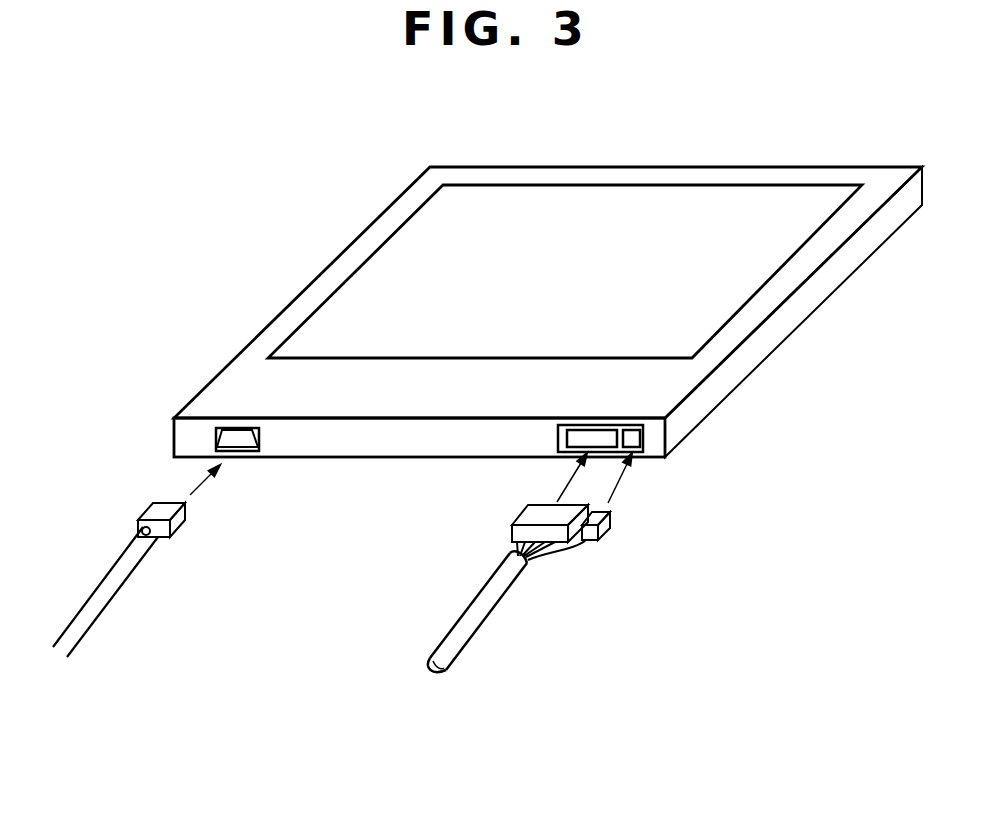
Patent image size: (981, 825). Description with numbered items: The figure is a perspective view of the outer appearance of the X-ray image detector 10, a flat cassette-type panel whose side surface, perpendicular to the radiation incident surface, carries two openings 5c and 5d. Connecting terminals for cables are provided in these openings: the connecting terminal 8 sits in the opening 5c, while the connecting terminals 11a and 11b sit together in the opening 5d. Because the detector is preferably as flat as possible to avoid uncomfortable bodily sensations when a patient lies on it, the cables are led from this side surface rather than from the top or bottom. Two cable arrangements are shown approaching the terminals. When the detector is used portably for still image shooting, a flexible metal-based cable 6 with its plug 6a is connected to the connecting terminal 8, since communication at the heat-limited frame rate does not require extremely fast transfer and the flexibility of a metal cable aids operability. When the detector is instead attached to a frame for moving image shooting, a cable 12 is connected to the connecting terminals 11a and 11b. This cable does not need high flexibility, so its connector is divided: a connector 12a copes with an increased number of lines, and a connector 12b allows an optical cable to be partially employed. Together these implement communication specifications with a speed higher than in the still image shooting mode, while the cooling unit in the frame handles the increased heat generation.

The X-ray image detector 10 is at (790, 282).
The opening 5c is at (216, 434).
The connecting terminal 8 is at (240, 435).
The cable plug 6a is at (160, 513).
The cable 6 is at (103, 592).
The opening 5d is at (630, 440).
The connecting terminal 11a is at (576, 438).
The connecting terminal 11b is at (636, 438).
The connector 12a is at (532, 520).
The connector 12b is at (605, 533).
The cable 12 is at (473, 616).